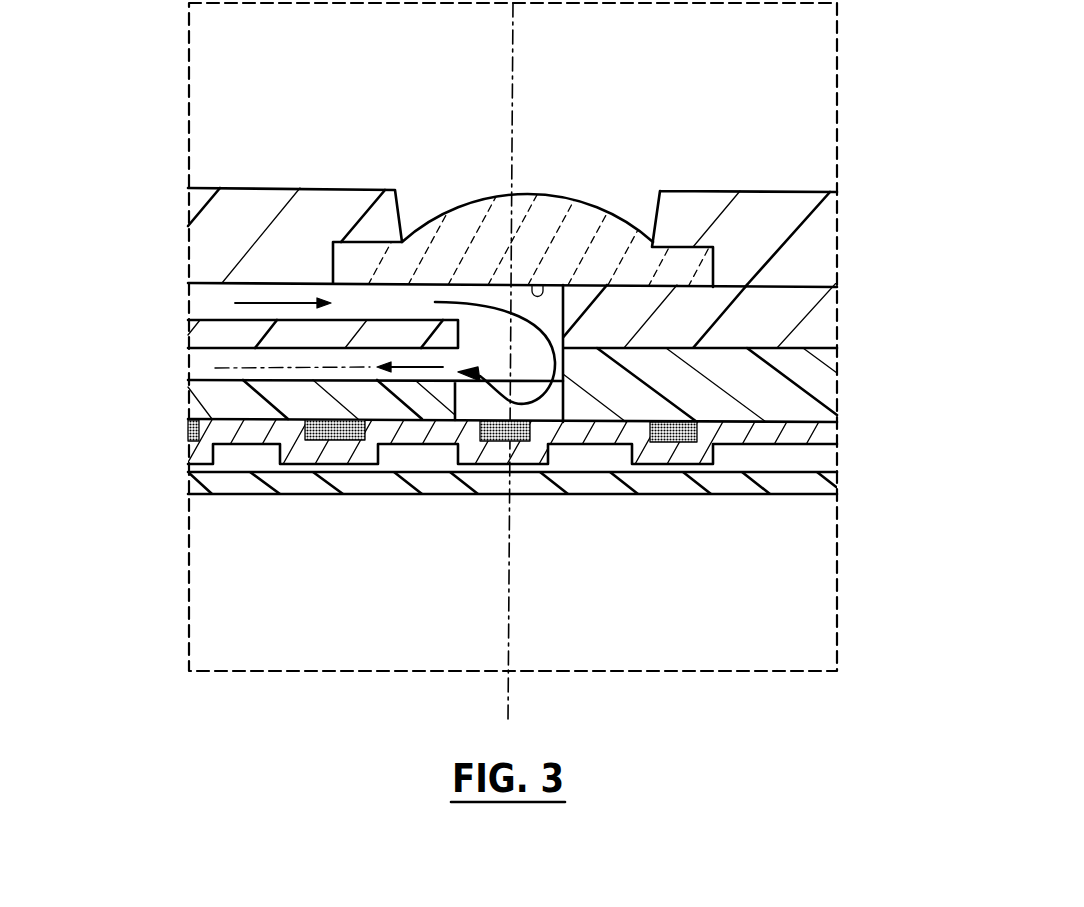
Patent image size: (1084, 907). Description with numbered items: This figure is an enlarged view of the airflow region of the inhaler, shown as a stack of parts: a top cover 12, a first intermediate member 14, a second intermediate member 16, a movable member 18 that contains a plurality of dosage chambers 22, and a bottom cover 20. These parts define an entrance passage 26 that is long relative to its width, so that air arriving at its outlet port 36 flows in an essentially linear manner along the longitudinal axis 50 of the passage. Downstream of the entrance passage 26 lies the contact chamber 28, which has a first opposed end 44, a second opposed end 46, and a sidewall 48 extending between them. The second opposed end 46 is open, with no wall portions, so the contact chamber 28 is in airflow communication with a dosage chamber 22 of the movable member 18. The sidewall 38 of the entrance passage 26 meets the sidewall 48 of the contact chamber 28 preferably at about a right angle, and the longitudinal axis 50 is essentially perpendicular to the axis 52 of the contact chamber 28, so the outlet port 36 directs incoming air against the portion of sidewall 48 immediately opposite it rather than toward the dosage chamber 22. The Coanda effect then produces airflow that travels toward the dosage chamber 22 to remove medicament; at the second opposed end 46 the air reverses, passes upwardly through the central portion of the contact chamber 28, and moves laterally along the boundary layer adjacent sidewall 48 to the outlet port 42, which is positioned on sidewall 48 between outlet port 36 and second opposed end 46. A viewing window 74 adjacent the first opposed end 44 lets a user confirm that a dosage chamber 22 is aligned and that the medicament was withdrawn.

The top cover 12 is at (205, 240).
The first intermediate member 14 is at (200, 340).
The second intermediate member 16 is at (200, 382).
The movable member 18 is at (815, 433).
The bottom cover 20 is at (805, 490).
The dosage chamber 22 is at (350, 444).
The entrance passage 26 is at (200, 301).
The contact chamber 28 is at (528, 373).
The outlet port 36 is at (458, 294).
The sidewall 38 is at (380, 318).
The outlet port 42 is at (447, 380).
The first opposed end 44 is at (605, 197).
The second opposed end 46 is at (540, 425).
The sidewall 48 is at (527, 412).
The longitudinal axis 50 is at (215, 368).
The axis 52 is at (513, 88).
The viewing window 74 is at (540, 287).